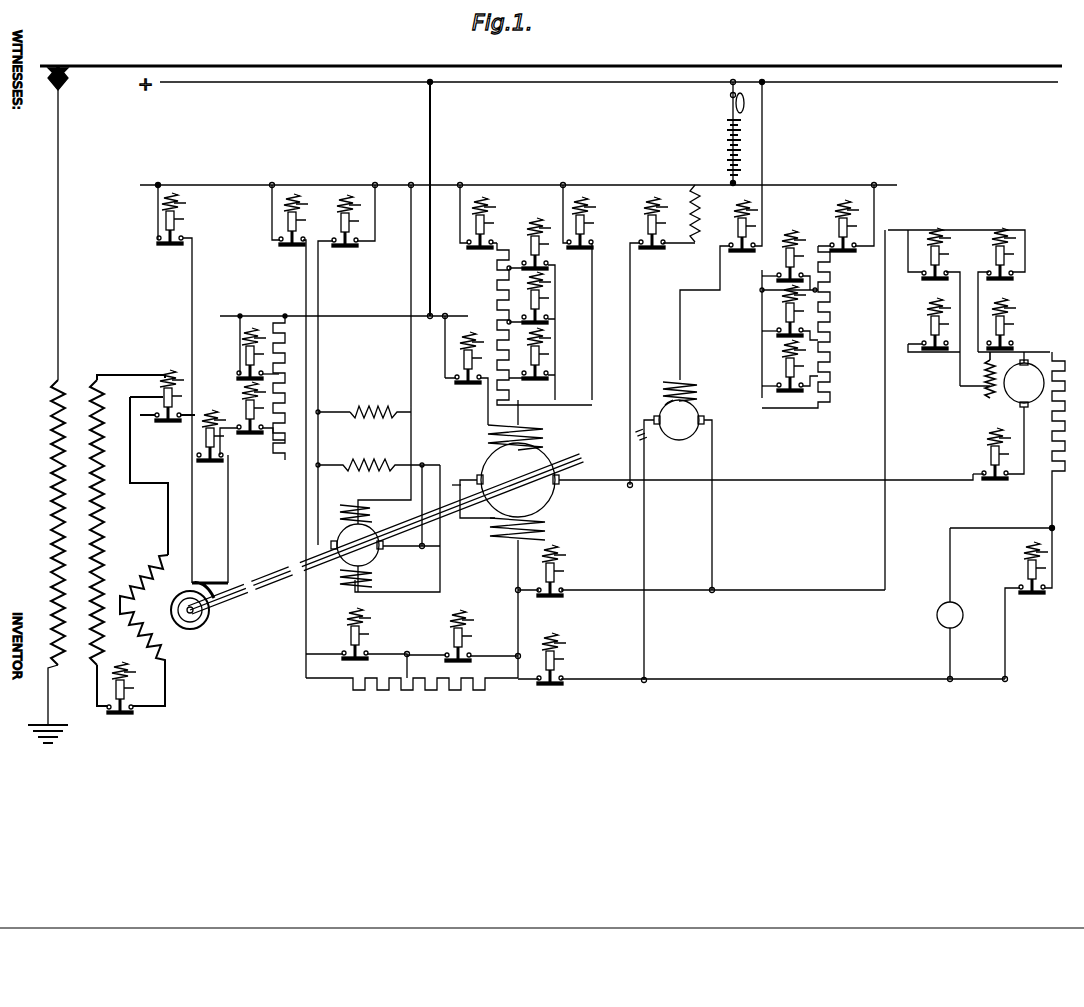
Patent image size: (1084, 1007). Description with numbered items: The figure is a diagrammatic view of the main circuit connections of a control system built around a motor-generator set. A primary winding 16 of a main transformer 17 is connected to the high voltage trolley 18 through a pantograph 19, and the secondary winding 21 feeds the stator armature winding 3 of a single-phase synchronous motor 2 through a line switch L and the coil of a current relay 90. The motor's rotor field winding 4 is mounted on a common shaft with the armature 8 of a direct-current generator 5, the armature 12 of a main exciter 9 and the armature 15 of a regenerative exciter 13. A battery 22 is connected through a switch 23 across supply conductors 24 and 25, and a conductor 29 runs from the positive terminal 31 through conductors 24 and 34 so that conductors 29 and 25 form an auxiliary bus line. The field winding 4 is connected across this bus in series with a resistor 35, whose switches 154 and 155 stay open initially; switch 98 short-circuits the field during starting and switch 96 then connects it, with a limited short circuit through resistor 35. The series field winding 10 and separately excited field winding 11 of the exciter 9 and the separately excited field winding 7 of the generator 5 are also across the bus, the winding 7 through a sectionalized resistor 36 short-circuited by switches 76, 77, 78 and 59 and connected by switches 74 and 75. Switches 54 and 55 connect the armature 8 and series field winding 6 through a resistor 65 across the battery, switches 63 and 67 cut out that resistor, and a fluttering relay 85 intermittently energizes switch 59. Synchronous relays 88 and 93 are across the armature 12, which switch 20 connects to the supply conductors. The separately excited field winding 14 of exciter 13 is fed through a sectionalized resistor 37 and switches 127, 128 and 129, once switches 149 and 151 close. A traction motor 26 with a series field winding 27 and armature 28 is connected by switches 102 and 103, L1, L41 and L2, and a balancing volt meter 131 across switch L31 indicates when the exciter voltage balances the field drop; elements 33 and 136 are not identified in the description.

The high voltage trolley 18 is at (110, 66).
The pantograph or current-collecting device 19 is at (70, 82).
The direct-current supply conductor 24 is at (566, 84).
The direct-current supply conductor 25 is at (594, 190).
The switch 23 is at (727, 110).
The battery 22 is at (727, 161).
The positive terminal of the battery 31 is at (742, 113).
The primary winding 16 is at (52, 492).
The main or supply transformer 17 is at (80, 691).
The secondary or low-voltage winding 21 is at (104, 488).
The current relay or limit switch 90 is at (177, 373).
The stator armature winding 3 is at (140, 578).
The line switch L is at (120, 700).
The single-phase synchronous motor 2 is at (210, 658).
The rotor field winding 4 is at (171, 606).
The switch 96 is at (165, 265).
The switch 98 is at (226, 489).
The conductor 29 is at (369, 312).
The supply conductor 34 is at (428, 312).
The switch 155 is at (236, 375).
The resistor 35 is at (286, 388).
The switch 154 is at (268, 450).
The switch 54 is at (330, 237).
The switch 20 is at (386, 263).
The synchronous relay 88 is at (365, 344).
The synchronizing relay 93 is at (378, 455).
The separately excited field winding 11 is at (358, 502).
The armature 12 is at (345, 534).
The main exciter 9 is at (379, 556).
The series field winding 10 is at (348, 597).
The conductor 33 is at (441, 563).
The resistor 65 is at (436, 690).
The switch 63 is at (342, 655).
The switch 67 is at (434, 653).
The switch 74 is at (466, 378).
The switch 75 is at (516, 237).
The sectionalized resistor 36 is at (497, 300).
The switch 76 is at (588, 279).
The switch 77 is at (588, 321).
The switch 78 is at (588, 375).
The switch 59 is at (616, 243).
The switch 55 is at (642, 243).
The fluttering relay 85 is at (699, 216).
The switch 149 is at (736, 243).
The separately excited field winding 14 is at (690, 384).
The regenerative exciter 13 is at (696, 459).
The armature 15 is at (669, 400).
The switch 151 is at (826, 233).
The sectionalized resistor 37 is at (826, 352).
The short-circuiting switch 127 is at (784, 271).
The short-circuiting switch 128 is at (754, 331).
The short-circuiting switch 129 is at (758, 381).
The separately excited field winding 7 is at (528, 436).
The armature 8 is at (490, 464).
The direct-current generator 5 is at (575, 515).
The series field winding 6 is at (548, 529).
The switch L1 is at (602, 583).
The switch L2 is at (602, 672).
The switch 103 is at (1064, 258).
The switch 102 is at (921, 340).
The series-type field winding 27 is at (985, 396).
The direct-current traction motor 26 is at (1010, 435).
The armature 28 is at (1028, 372).
The resistor 136 is at (1050, 428).
The switch L41 is at (976, 471).
The switch L31 is at (1007, 583).
The balancing volt meter 131 is at (936, 617).